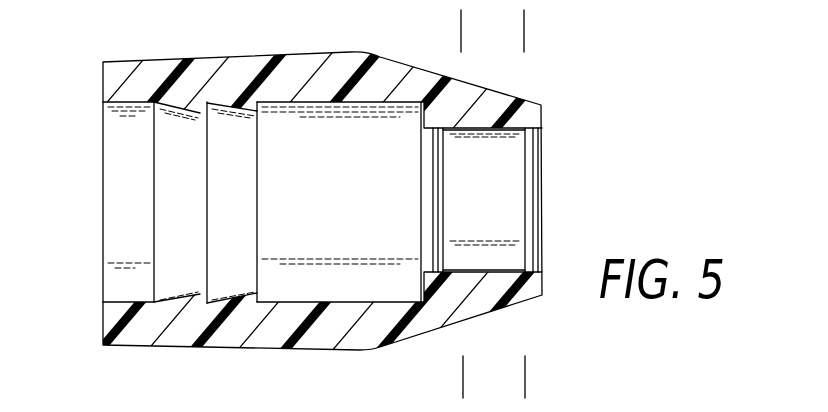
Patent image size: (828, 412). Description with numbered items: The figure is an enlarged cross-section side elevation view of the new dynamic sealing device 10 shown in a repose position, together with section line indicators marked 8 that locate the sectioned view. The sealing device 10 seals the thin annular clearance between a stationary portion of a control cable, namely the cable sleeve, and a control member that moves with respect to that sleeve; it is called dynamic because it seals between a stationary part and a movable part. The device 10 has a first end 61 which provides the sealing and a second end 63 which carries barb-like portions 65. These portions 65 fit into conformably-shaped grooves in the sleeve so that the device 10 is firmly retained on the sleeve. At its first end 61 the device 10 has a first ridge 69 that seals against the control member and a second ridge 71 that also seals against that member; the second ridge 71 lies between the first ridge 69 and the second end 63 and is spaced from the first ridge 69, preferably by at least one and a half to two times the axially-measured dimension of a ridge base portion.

The dynamic sealing device 10 is at (111, 355).
The section line for FIG. 8 is at (514, 20).
The first end 61 is at (476, 316).
The second end 63 is at (118, 62).
The barb-like portions 65 is at (200, 113).
The first ridge 69 is at (538, 168).
The second ridge 71 is at (440, 193).